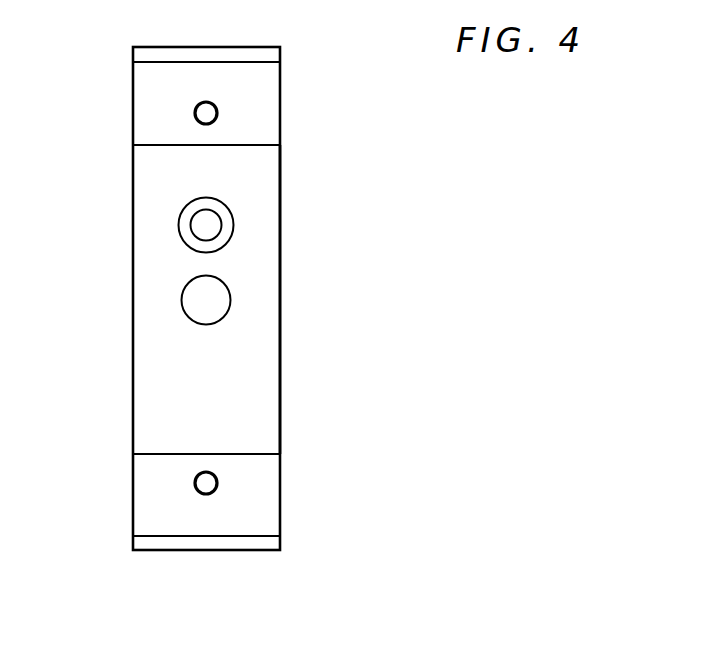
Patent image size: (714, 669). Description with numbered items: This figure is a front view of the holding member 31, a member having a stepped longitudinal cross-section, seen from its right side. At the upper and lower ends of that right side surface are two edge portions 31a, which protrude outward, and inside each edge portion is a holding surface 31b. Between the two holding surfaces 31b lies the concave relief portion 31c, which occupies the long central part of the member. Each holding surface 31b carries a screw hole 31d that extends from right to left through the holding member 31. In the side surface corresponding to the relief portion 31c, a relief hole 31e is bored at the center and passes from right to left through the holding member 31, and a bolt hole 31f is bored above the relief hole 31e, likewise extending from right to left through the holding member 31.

The holding member 31 is at (463, 244).
The edge portions 31a is at (275, 55).
The holding surfaces 31b is at (273, 108).
The relief portion 31c is at (267, 216).
The screw holes 31d is at (198, 114).
The relief hole 31e is at (192, 300).
The bolt hole 31f is at (197, 225).